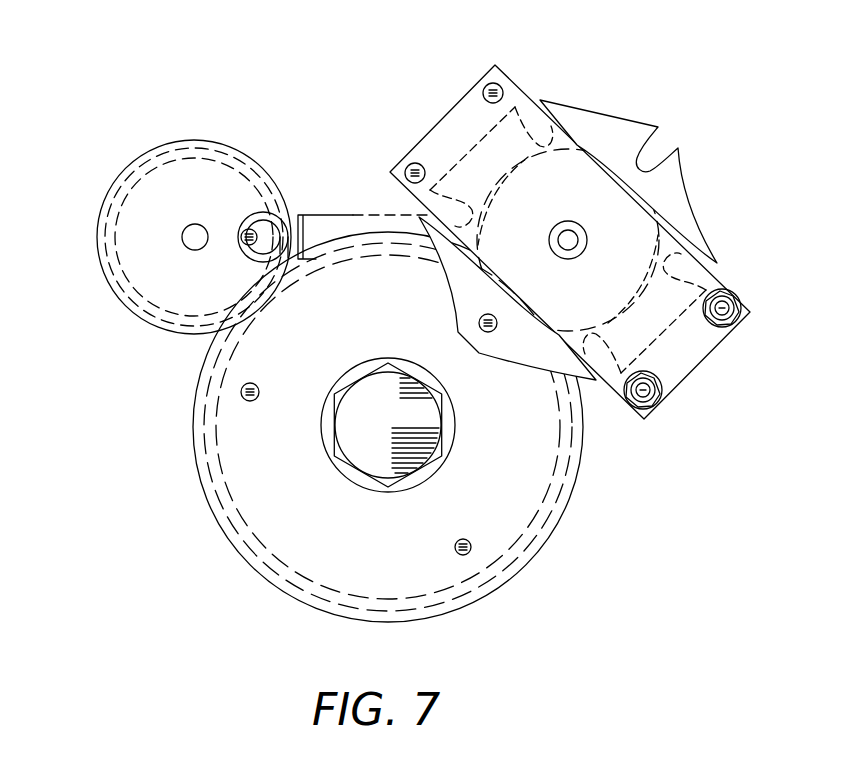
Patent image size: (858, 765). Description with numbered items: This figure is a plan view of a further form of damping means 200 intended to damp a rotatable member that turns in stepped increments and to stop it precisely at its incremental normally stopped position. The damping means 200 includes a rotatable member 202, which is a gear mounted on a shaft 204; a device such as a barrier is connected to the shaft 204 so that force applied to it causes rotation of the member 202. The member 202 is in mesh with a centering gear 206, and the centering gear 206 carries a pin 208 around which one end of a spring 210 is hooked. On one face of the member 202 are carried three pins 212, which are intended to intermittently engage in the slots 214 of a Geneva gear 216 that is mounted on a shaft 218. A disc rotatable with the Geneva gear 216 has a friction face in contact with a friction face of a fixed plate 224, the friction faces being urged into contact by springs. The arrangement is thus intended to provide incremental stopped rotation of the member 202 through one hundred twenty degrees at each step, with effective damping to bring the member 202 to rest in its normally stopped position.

The damping means 200 is at (311, 92).
The rotatable member 202 is at (523, 491).
The shaft 204 is at (363, 457).
The centering gear 206 is at (208, 142).
The pin 208 is at (250, 233).
The spring 210 is at (336, 214).
The pins 212 is at (250, 402).
The slots 214 is at (662, 132).
The Geneva gear 216 is at (682, 205).
The shaft 218 is at (565, 221).
The fixed plate 224 is at (478, 105).